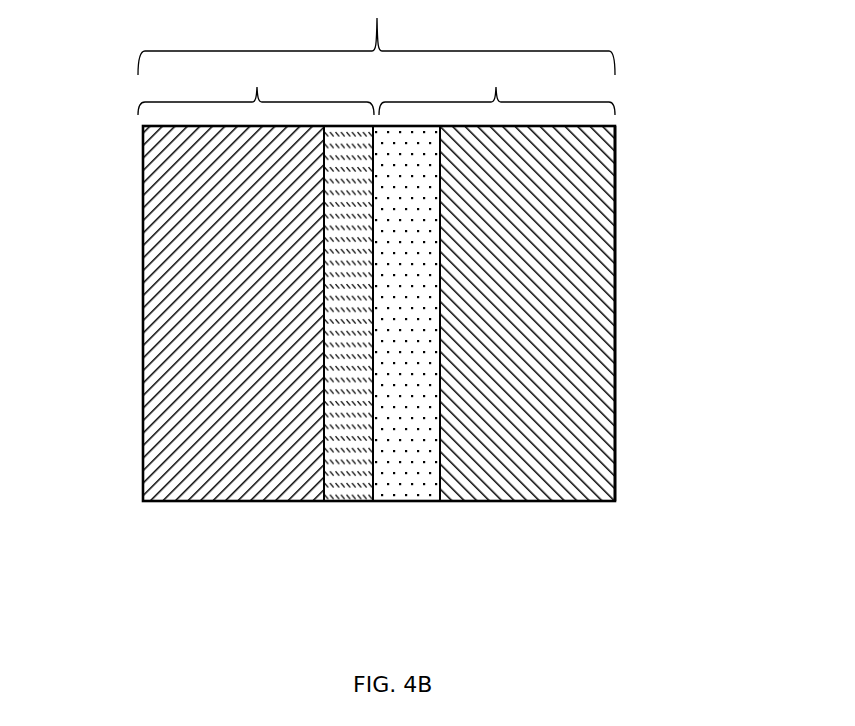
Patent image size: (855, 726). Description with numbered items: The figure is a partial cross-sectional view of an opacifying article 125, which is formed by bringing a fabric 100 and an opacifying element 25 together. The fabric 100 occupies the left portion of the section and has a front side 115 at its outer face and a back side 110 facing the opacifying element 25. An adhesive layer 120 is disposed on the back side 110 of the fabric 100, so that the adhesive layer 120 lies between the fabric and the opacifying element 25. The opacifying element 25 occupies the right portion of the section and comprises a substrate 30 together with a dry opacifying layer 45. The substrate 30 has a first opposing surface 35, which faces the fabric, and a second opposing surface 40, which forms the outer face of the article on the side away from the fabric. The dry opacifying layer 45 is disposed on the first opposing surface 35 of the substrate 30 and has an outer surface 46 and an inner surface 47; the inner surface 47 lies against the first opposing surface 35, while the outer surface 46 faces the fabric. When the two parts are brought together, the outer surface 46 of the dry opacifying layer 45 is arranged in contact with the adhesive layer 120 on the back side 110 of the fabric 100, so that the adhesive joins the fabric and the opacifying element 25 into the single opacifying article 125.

The opacifying article 125 is at (376, 42).
The fabric 100 is at (256, 89).
The opacifying element 25 is at (497, 90).
The front side 115 is at (143, 249).
The back side 110 is at (324, 455).
The adhesive layer 120 is at (349, 487).
The outer surface 46 is at (373, 468).
The inner surface 47 is at (417, 463).
The dry opacifying layer 45 is at (410, 487).
The first opposing surface 35 is at (440, 453).
The substrate 30 is at (597, 450).
The second opposing surface 40 is at (615, 313).